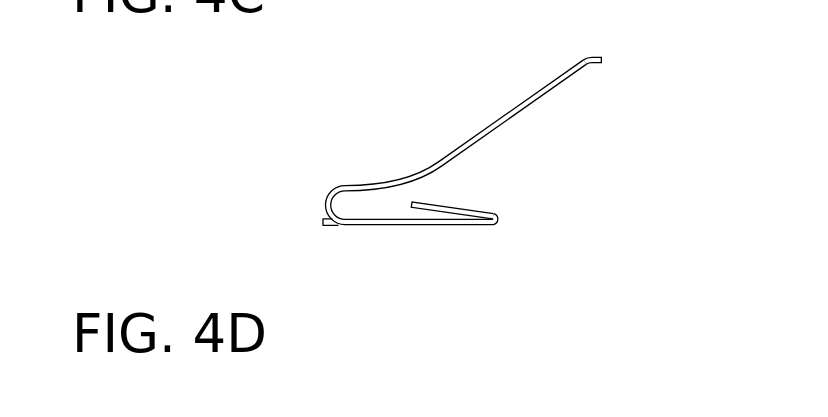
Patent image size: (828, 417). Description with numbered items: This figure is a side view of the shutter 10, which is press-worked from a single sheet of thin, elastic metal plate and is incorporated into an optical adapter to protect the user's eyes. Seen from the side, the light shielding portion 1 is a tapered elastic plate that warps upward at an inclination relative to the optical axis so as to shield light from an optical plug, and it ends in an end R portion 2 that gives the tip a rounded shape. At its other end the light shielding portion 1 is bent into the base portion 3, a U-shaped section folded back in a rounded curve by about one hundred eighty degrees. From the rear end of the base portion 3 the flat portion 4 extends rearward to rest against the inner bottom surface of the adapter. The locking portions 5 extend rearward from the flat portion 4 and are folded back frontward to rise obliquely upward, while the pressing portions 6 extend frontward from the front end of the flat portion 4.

The light shielding portion 1 is at (484, 132).
The end R portion 2 is at (592, 55).
The base portion 3 is at (325, 203).
The flat portion 4 is at (430, 226).
The locking portion 5 is at (437, 203).
The pressing portion 6 is at (331, 226).
The shutter 10 is at (526, 140).